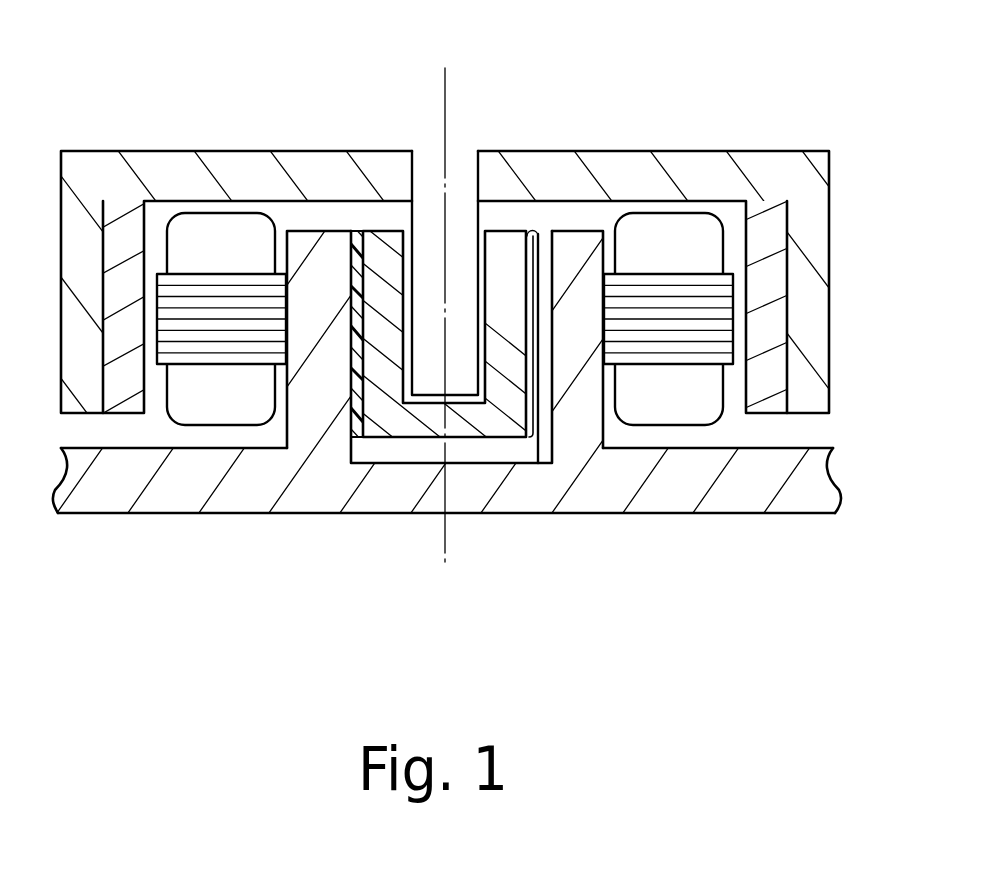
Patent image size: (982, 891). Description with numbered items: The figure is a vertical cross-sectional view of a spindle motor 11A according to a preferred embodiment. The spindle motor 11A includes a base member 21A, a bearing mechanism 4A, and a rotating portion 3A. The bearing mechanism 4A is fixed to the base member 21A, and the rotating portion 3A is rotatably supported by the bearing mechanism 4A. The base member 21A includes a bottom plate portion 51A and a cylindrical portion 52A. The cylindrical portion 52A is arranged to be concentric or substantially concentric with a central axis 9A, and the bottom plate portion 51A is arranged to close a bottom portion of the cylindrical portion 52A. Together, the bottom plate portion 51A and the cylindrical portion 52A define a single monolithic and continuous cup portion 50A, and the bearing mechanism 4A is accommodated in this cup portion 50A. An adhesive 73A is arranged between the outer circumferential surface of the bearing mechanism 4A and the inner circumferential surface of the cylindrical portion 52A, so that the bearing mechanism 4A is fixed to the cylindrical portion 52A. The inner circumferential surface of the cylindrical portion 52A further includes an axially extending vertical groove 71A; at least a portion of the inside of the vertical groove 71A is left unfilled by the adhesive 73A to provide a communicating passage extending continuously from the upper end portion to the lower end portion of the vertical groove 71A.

The spindle motor 11A is at (217, 108).
The rotating portion 3A is at (685, 142).
The central axis 9A is at (445, 95).
The bearing mechanism 4A is at (486, 418).
The adhesive 73A is at (352, 292).
The vertical groove 71A is at (548, 310).
The cup portion 50A is at (378, 597).
The bottom plate portion 51A is at (386, 488).
The cylindrical portion 52A is at (325, 372).
The base member 21A is at (655, 523).